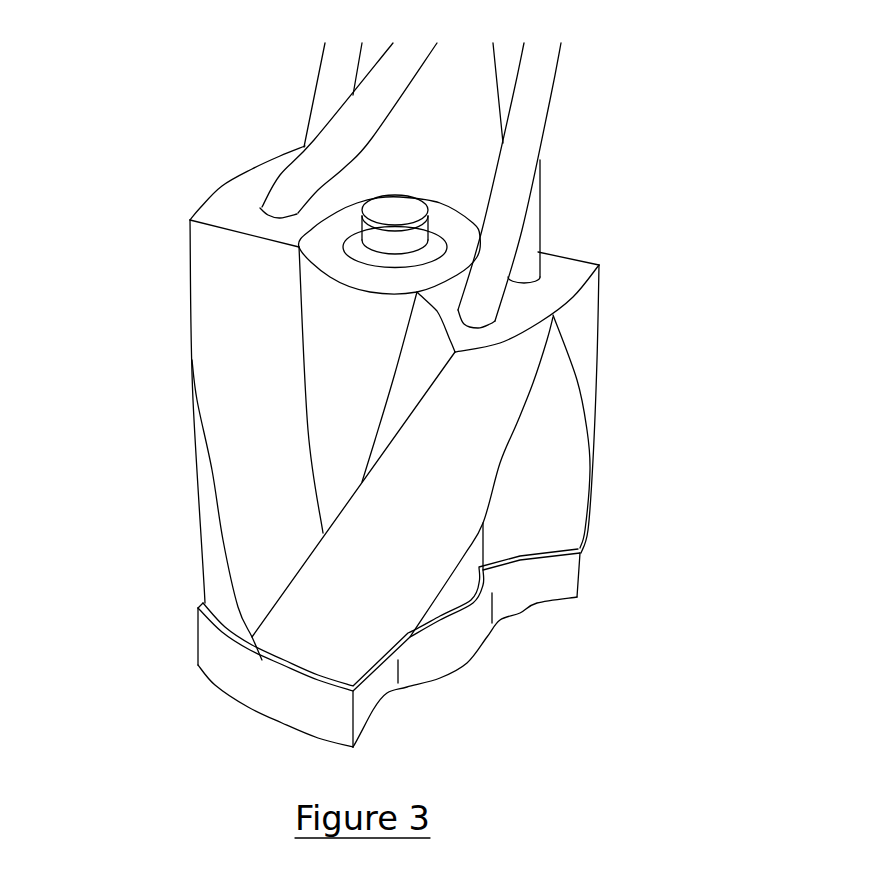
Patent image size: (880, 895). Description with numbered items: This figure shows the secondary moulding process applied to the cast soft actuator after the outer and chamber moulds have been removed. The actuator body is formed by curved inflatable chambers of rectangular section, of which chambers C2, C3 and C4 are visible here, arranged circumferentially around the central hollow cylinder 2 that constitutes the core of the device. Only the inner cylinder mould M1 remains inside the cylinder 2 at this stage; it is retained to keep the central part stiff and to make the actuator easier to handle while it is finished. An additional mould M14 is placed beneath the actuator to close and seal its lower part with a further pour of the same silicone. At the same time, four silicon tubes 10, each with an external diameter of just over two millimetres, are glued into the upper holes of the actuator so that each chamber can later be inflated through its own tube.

The silicon tubes 10 is at (380, 110).
The inner cylinder mould M1 is at (387, 212).
The central hollow cylinder 2 is at (353, 415).
The inflatable chamber C4 is at (228, 382).
The inflatable chamber C2 is at (570, 357).
The inflatable chamber C3 is at (393, 588).
The additional mould M14 is at (257, 692).